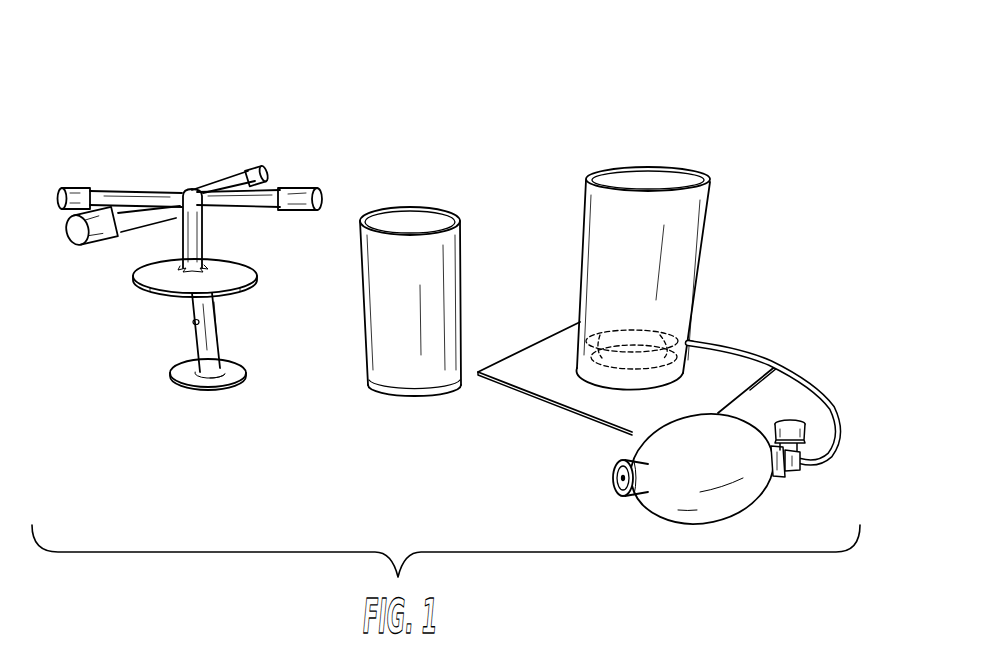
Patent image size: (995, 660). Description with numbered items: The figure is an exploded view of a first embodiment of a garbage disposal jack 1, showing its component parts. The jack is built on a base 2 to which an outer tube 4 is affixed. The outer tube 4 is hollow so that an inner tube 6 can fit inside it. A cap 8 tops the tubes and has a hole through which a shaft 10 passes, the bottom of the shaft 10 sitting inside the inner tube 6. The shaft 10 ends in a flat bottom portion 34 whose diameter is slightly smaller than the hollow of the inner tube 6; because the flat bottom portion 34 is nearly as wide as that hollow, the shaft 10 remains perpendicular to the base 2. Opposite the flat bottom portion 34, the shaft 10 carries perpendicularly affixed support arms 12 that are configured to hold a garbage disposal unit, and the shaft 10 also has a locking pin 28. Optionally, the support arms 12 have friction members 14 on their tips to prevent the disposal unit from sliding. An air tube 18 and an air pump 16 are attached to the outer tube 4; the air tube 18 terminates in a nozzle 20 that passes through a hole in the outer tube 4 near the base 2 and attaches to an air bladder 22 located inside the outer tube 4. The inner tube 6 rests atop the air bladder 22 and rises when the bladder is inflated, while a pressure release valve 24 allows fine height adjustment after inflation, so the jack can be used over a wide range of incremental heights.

The garbage disposal jack 1 is at (727, 72).
The base 2 is at (528, 378).
The outer tube 4 is at (692, 272).
The inner tube 6 is at (450, 265).
The cap 8 is at (131, 284).
The shaft 10 is at (214, 317).
The support arms 12 is at (128, 191).
The friction members 14 is at (267, 172).
The air pump 16 is at (752, 500).
The air tube 18 is at (813, 397).
The nozzle 20 is at (684, 342).
The air bladder 22 is at (598, 342).
The pressure release valve 24 is at (803, 437).
The locking pin 28 is at (194, 324).
The flat bottom portion 34 is at (232, 381).